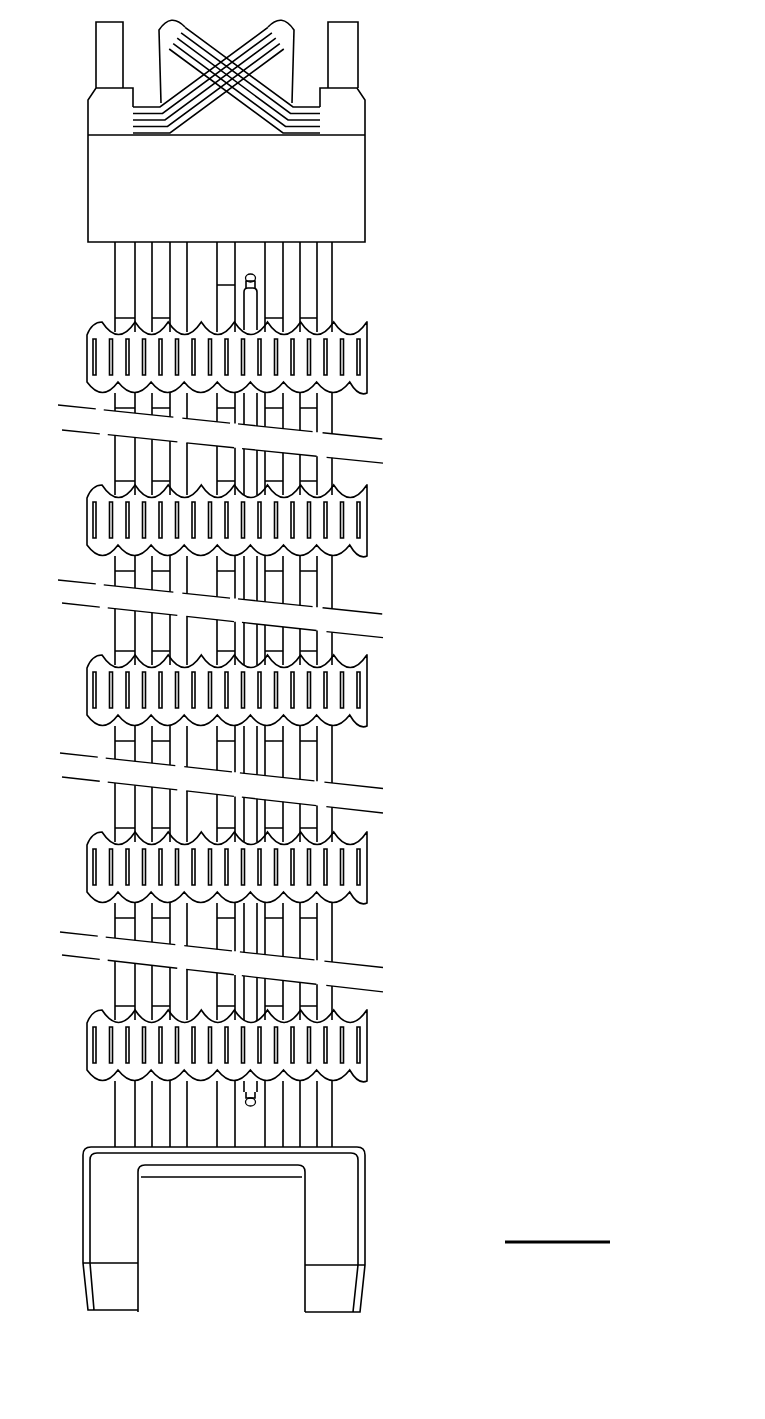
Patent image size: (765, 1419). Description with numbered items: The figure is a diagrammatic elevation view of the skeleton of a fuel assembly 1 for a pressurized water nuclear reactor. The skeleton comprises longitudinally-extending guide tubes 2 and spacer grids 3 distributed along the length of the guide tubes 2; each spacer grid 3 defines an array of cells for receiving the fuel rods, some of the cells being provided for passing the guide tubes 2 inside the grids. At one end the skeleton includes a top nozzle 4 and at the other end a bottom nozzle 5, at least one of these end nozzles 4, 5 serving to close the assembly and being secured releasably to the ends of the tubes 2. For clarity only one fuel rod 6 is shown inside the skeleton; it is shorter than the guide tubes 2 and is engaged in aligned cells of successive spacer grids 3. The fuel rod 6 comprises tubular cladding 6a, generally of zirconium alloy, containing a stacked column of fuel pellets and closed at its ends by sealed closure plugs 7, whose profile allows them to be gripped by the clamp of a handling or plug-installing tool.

The fuel assembly 1 is at (327, 666).
The guide tubes 2 is at (305, 433).
The spacer grids 3 is at (87, 1054).
The top nozzle 4 is at (322, 212).
The bottom nozzle 5 is at (330, 1236).
The fuel rod 6 is at (250, 577).
The tubular cladding 6a is at (250, 938).
The sealed closure plugs 7 is at (253, 279).